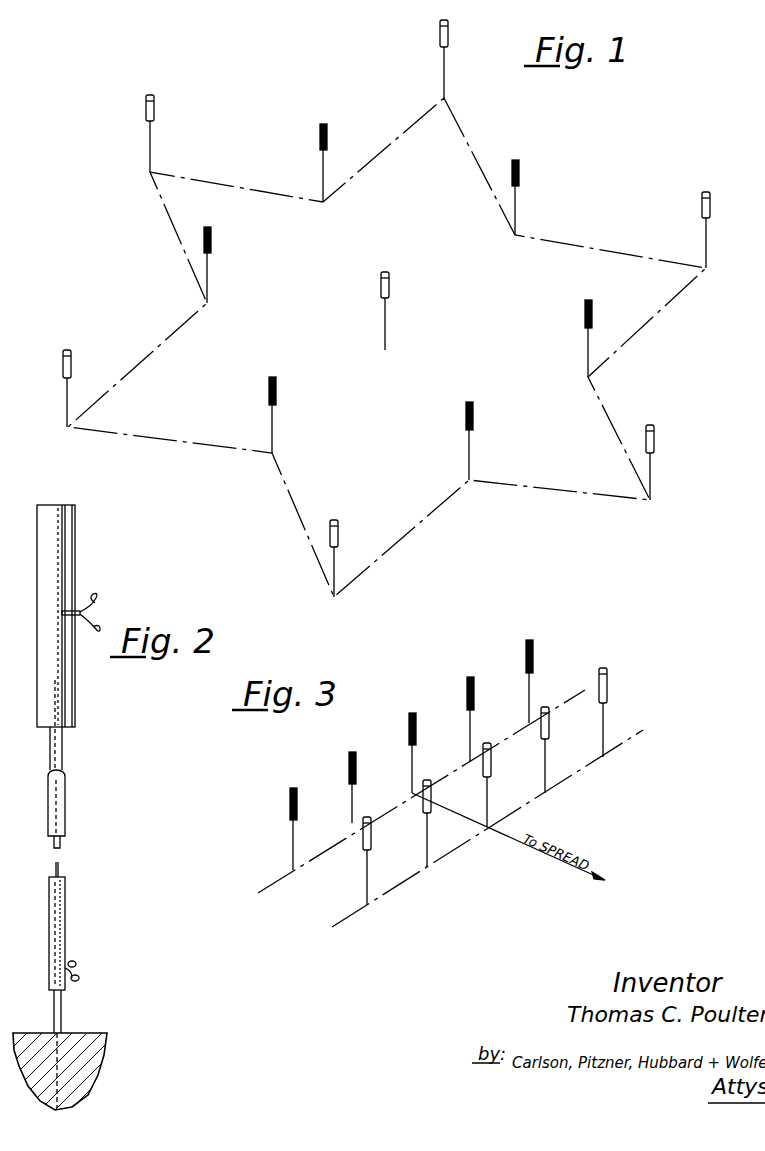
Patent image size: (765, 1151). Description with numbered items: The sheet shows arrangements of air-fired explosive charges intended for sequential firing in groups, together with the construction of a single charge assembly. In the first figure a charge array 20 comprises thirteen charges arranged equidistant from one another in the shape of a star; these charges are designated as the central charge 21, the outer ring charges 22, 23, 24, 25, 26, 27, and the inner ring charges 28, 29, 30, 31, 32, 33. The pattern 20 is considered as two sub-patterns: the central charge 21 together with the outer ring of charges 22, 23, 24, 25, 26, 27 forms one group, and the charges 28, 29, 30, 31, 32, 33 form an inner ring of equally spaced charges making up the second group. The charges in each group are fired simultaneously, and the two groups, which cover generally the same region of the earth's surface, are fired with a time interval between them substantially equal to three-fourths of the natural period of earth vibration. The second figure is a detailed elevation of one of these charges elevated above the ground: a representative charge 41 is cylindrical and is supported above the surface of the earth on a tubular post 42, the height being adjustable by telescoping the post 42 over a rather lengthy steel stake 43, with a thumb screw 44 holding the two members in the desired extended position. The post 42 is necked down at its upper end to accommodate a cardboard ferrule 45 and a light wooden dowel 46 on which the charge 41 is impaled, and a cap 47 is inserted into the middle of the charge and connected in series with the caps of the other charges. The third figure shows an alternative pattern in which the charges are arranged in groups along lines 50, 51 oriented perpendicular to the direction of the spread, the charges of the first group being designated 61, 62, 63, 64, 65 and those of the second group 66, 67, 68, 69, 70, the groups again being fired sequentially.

In FIG. 1, the charge array 20 is at (593, 173).
In FIG. 1, the central charge 21 is at (389, 280).
In FIG. 1, the outer ring charge 22 is at (71, 370).
In FIG. 1, the outer ring charge 23 is at (155, 107).
In FIG. 1, the outer ring charge 24 is at (448, 30).
In FIG. 1, the outer ring charge 25 is at (710, 200).
In FIG. 1, the outer ring charge 26 is at (654, 436).
In FIG. 1, the outer ring charge 27 is at (338, 528).
In FIG. 1, the inner ring charge 28 is at (276, 384).
In FIG. 1, the inner ring charge 29 is at (211, 243).
In FIG. 1, the inner ring charge 30 is at (327, 143).
In FIG. 1, the inner ring charge 31 is at (519, 170).
In FIG. 1, the inner ring charge 32 is at (592, 312).
In FIG. 1, the inner ring charge 33 is at (473, 408).
In FIG. 2, the charge 41 is at (75, 672).
In FIG. 2, the tubular post 42 is at (65, 905).
In FIG. 2, the steel stake 43 is at (62, 1018).
In FIG. 2, the thumb screw 44 is at (77, 966).
In FIG. 2, the cardboard ferrule 45 is at (62, 752).
In FIG. 2, the wooden dowel 46 is at (60, 705).
In FIG. 2, the cap 47 is at (80, 610).
In FIG. 3, the line 50 is at (358, 918).
In FIG. 3, the line 51 is at (272, 884).
In FIG. 3, the first group charge 61 is at (362, 840).
In FIG. 3, the first group charge 62 is at (422, 804).
In FIG. 3, the first group charge 63 is at (482, 766).
In FIG. 3, the first group charge 64 is at (540, 729).
In FIG. 3, the first group charge 65 is at (598, 690).
In FIG. 3, the second group charge 66 is at (289, 796).
In FIG. 3, the second group charge 67 is at (348, 762).
In FIG. 3, the second group charge 68 is at (408, 724).
In FIG. 3, the second group charge 69 is at (466, 688).
In FIG. 3, the second group charge 70 is at (525, 652).